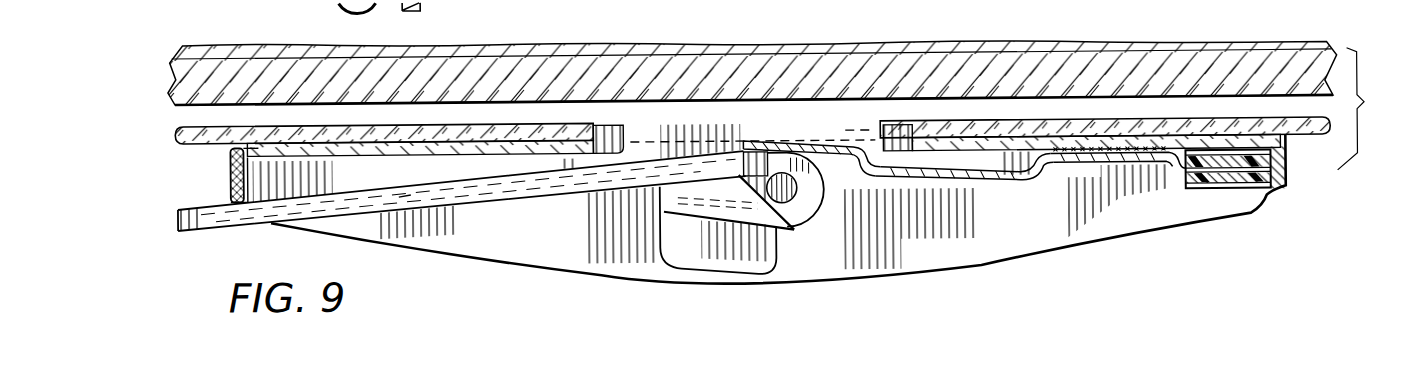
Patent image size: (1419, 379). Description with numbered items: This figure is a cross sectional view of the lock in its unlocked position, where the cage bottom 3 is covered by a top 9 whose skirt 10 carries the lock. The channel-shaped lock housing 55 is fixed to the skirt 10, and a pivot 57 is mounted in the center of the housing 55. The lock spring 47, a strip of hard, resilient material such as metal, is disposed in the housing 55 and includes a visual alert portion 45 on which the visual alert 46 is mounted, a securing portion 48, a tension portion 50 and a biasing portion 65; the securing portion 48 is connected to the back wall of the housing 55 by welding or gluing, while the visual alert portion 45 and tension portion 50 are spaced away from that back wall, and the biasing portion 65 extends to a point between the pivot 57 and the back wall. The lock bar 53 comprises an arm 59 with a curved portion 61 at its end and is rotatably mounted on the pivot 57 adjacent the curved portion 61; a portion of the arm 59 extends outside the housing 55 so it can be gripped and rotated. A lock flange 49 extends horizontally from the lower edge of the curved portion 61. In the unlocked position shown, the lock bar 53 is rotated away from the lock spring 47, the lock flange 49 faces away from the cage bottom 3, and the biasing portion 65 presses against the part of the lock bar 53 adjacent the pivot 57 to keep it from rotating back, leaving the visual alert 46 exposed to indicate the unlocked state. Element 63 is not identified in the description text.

The cage bottom 3 is at (1295, 50).
The top 9 is at (176, 132).
The skirt 10 is at (752, 0).
The visual alert portion 45 is at (1243, 190).
The visual alert 46 is at (218, 227).
The lock spring 47 is at (1017, 182).
The securing portion 48 is at (1117, 163).
The lock flange 49 is at (660, 232).
The tension portion 50 is at (993, 183).
The lock bar 53 is at (513, 199).
The lock housing 55 is at (228, 167).
The pivot 57 is at (793, 230).
The arm 59 is at (403, 196).
The curved portion 61 is at (820, 204).
The gap 63 is at (855, 131).
The biasing portion 65 is at (790, 141).